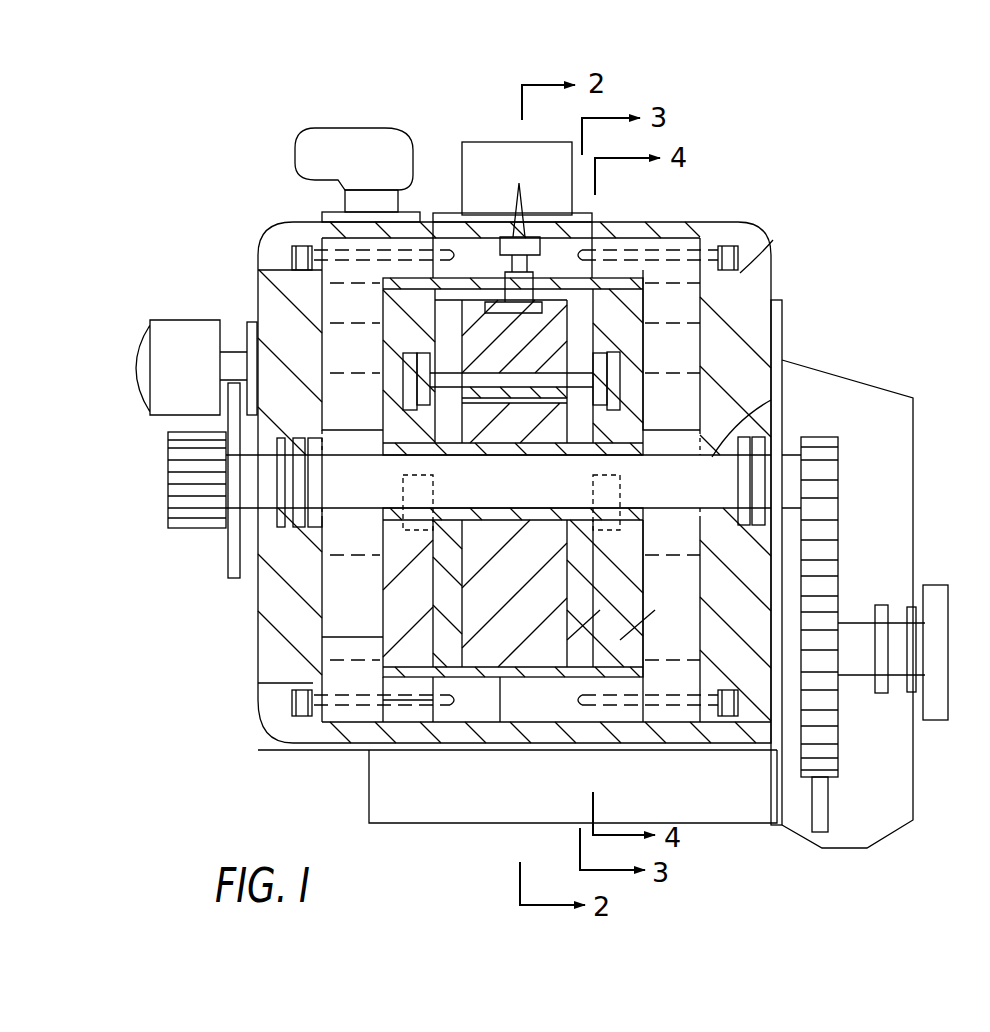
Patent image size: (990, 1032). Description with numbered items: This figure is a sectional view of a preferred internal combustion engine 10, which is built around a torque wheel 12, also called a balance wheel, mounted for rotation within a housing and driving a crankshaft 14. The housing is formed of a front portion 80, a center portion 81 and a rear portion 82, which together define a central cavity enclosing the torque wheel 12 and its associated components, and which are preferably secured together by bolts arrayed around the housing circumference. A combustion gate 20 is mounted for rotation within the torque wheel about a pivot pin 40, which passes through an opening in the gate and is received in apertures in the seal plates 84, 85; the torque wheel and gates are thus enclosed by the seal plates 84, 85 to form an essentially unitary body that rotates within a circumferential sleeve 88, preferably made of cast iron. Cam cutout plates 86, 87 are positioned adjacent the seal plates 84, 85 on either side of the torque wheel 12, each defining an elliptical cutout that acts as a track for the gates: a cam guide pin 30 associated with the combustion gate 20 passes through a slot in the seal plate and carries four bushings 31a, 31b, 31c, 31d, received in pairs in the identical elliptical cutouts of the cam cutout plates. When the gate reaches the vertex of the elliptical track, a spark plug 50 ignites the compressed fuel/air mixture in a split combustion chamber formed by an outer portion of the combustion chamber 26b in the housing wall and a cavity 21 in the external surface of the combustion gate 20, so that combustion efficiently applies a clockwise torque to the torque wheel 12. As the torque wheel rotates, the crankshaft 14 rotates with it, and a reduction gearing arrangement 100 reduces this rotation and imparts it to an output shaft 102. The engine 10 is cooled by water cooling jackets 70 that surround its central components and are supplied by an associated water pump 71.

The internal combustion engine 10 is at (753, 137).
The torque wheel 12 is at (455, 740).
The crankshaft 14 is at (775, 393).
The combustion gate 20 is at (560, 290).
The cavity 21 is at (557, 330).
The outer portion of the combustion chamber 26b is at (505, 298).
The cam guide pin 30 is at (615, 382).
The bushing 31a is at (405, 362).
The bushing 31b is at (420, 367).
The bushing 31c is at (600, 375).
The bushing 31d is at (622, 382).
The pivot pin 40 is at (485, 405).
The spark plug 50 is at (515, 300).
The water cooling jackets 70 is at (328, 397).
The water pump 71 is at (160, 328).
The front portion 80 is at (318, 218).
The center portion 81 is at (462, 230).
The rear portion 82 is at (752, 240).
The seal plate 84 is at (440, 690).
The seal plate 85 is at (618, 612).
The cam cutout plate 86 is at (388, 640).
The cam cutout plate 87 is at (690, 660).
The circumferential sleeve 88 is at (530, 660).
The reduction gearing arrangement 100 is at (840, 483).
The output shaft 102 is at (895, 668).